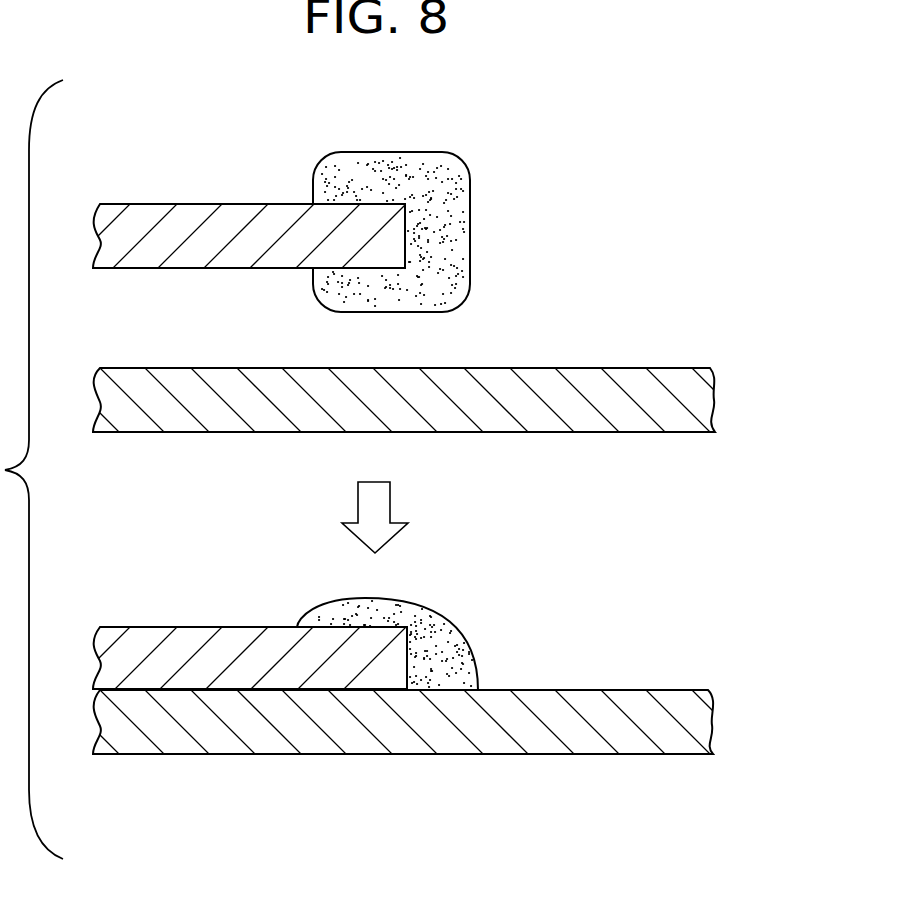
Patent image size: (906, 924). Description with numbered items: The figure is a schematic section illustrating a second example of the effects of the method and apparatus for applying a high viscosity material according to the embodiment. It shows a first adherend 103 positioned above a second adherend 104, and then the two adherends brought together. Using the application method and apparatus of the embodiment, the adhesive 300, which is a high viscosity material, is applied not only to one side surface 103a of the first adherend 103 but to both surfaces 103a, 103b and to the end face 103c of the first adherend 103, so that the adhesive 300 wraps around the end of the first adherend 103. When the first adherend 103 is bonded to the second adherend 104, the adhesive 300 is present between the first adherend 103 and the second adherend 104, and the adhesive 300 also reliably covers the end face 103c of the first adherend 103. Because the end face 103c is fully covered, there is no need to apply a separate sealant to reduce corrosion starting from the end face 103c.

The first adherend 103 is at (195, 212).
The side surface of the first adherend 103a is at (230, 270).
The side surface of the first adherend 103b is at (247, 205).
The end face of the first adherend 103c is at (410, 233).
The second adherend 104 is at (218, 427).
The adhesive 300 is at (457, 193).